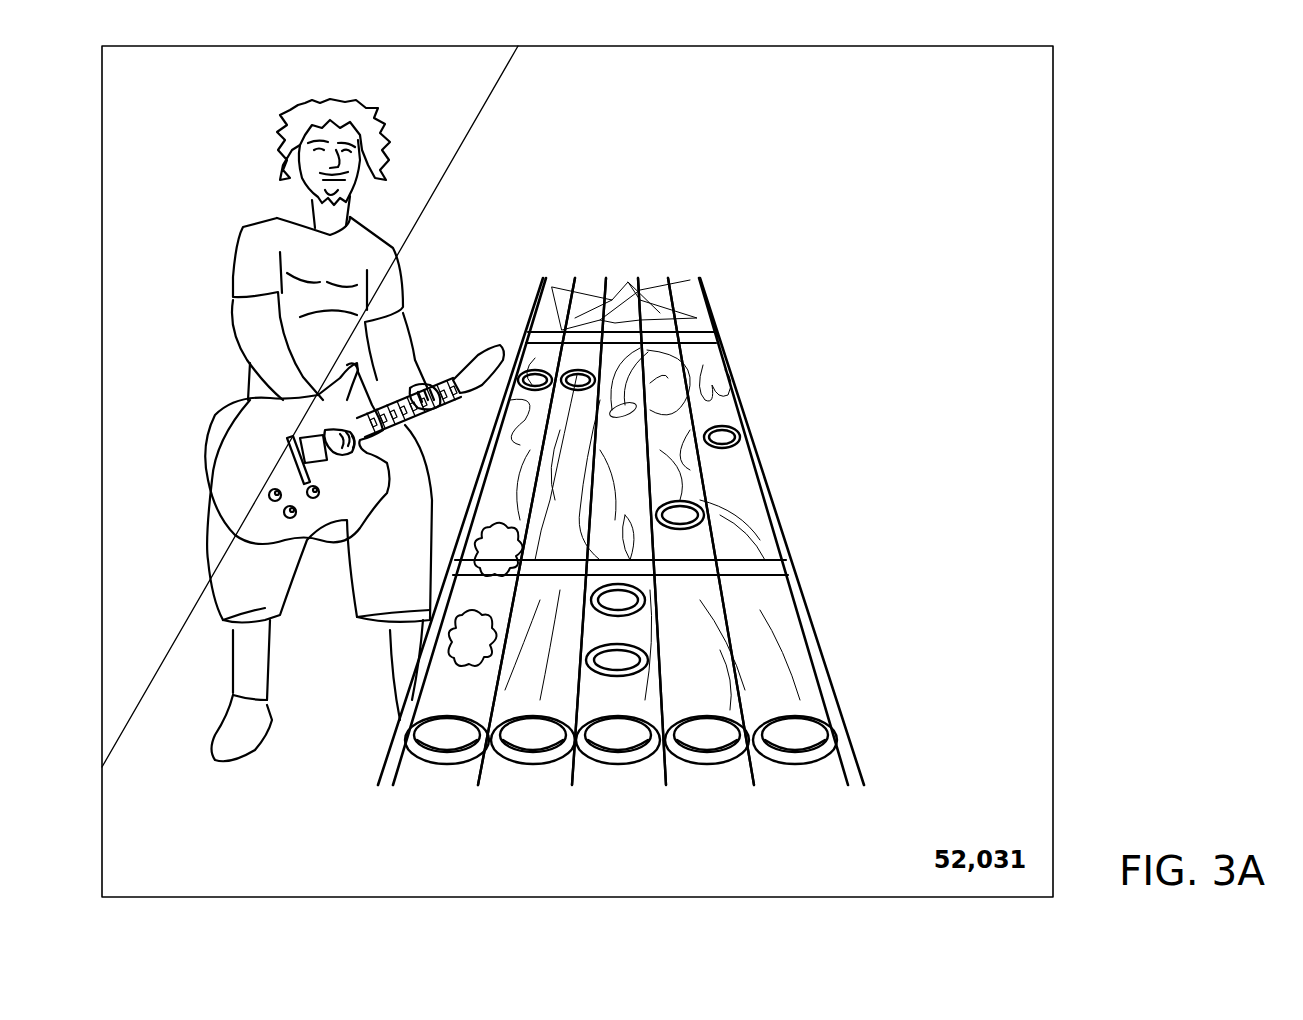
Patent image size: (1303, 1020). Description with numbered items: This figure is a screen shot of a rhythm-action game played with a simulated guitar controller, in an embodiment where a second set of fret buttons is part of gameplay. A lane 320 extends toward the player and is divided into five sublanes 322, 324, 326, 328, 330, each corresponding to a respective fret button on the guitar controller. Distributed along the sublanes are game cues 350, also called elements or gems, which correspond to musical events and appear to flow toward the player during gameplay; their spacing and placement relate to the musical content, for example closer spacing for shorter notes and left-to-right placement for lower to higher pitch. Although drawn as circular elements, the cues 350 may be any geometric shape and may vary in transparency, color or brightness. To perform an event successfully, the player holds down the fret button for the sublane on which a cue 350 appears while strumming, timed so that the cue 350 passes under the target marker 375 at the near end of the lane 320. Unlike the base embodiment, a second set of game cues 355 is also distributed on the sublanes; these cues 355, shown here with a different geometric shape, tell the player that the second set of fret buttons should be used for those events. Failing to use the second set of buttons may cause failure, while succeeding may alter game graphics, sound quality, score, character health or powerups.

The lane 320 is at (621, 500).
The sublane 322 is at (563, 280).
The sublane 324 is at (594, 279).
The sublane 326 is at (628, 278).
The sublane 328 is at (657, 278).
The sublane 330 is at (766, 513).
The game cues 350 is at (722, 450).
The second set of game cues 355 is at (490, 615).
The target marker 375 is at (527, 760).